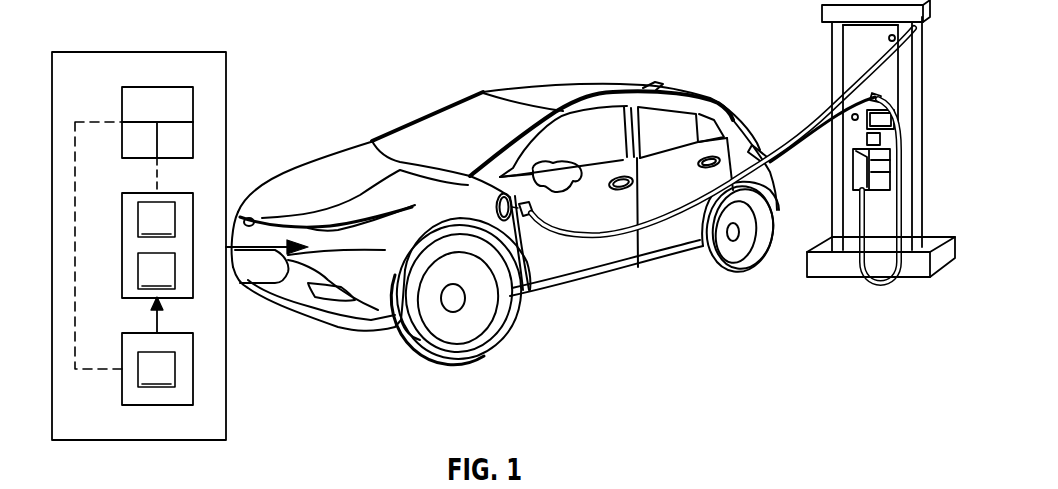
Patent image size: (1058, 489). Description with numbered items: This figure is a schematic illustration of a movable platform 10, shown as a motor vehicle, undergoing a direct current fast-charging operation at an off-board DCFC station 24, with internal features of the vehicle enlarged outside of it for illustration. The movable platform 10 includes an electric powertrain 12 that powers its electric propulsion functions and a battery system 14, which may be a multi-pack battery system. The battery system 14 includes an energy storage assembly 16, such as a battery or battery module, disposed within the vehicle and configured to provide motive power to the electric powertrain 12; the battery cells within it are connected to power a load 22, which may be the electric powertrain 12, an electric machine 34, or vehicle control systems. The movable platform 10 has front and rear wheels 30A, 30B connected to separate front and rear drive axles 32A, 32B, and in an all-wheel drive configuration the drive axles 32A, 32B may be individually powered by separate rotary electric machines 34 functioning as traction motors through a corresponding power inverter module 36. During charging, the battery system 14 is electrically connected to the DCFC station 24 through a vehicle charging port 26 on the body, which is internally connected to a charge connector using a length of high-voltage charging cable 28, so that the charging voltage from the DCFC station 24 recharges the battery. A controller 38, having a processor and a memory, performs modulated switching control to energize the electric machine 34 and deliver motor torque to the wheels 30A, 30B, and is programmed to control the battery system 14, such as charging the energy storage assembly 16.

The movable platform 10 is at (702, 48).
The electric powertrain 12 is at (122, 240).
The battery system 14 is at (156, 405).
The energy storage assembly 16 is at (156, 369).
The load 22 is at (159, 322).
The off-board DCFC station 24 is at (922, 100).
The vehicle charging port 26 is at (496, 207).
The high-voltage charging cable 28 is at (814, 131).
The front wheel 30A is at (443, 363).
The rear wheel 30B is at (714, 272).
The front drive axle 32A is at (453, 298).
The rear drive axle 32B is at (733, 232).
The electric machine 34 is at (156, 271).
The power inverter module 36 is at (156, 219).
The controller 38 is at (157, 87).